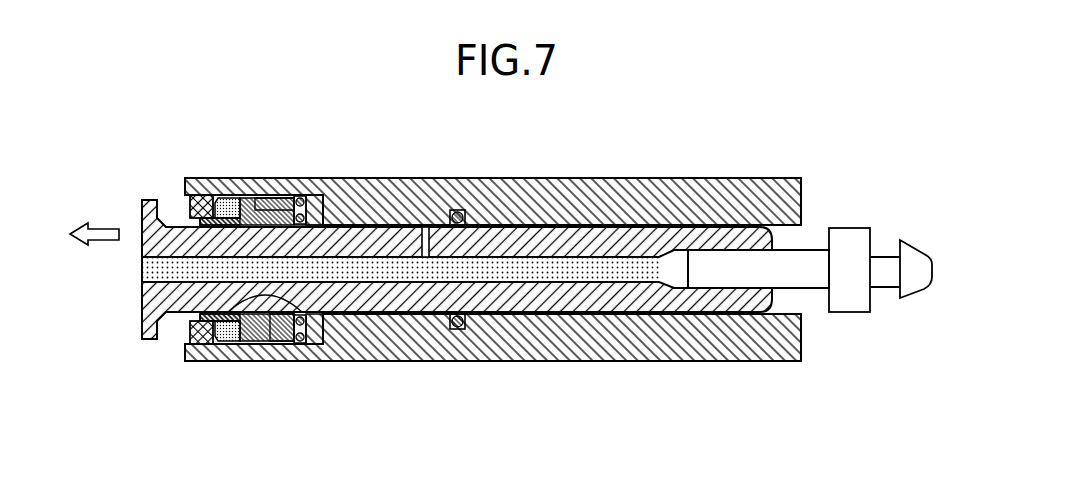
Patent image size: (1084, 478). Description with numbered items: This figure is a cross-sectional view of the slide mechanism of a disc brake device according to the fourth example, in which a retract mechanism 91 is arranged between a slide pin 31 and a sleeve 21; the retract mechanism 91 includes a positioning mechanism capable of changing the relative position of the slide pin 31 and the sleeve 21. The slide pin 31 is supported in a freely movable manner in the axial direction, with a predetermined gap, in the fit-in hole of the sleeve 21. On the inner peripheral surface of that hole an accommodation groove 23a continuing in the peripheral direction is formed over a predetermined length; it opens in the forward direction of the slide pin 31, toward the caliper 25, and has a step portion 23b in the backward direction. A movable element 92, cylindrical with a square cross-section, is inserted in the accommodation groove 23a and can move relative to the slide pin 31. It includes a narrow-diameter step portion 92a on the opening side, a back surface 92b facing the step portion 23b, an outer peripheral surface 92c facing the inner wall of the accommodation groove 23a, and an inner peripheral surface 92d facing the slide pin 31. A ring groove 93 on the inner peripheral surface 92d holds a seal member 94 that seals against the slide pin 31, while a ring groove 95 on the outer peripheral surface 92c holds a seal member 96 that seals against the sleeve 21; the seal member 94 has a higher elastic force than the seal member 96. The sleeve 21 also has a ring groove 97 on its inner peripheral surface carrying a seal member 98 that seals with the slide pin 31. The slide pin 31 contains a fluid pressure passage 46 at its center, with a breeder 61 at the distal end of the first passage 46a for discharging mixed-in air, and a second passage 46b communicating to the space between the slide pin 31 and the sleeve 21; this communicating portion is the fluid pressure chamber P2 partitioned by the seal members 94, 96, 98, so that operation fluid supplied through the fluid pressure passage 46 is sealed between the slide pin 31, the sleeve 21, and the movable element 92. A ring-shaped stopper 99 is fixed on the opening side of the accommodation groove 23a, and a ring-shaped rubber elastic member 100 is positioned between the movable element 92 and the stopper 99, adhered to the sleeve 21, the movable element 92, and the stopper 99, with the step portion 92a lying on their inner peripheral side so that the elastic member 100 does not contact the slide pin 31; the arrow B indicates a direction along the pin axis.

The sleeve 21 is at (779, 185).
The accommodation groove 23a is at (263, 344).
The step portion 23b is at (320, 345).
The caliper 25 is at (758, 269).
The slide pin 31 is at (697, 236).
The fluid pressure passage 46 is at (419, 270).
The first passage 46a is at (628, 270).
The second passage 46b is at (427, 227).
The breeder 61 is at (849, 245).
The retract mechanism 91 is at (254, 197).
The movable element 92 is at (280, 329).
The step portion 92a is at (210, 311).
The back surface 92b is at (324, 318).
The outer peripheral surface 92c is at (266, 197).
The inner peripheral surface 92d is at (210, 229).
The ring groove 93 is at (228, 344).
The seal member 94 is at (303, 227).
The ring groove 95 is at (302, 343).
The seal member 96 is at (299, 196).
The ring groove 97 is at (466, 329).
The seal member 98 is at (459, 209).
The stopper 99 is at (205, 344).
The elastic member 100 is at (209, 195).
The fluid pressure chamber P2 is at (323, 220).
The direction arrow B is at (103, 247).